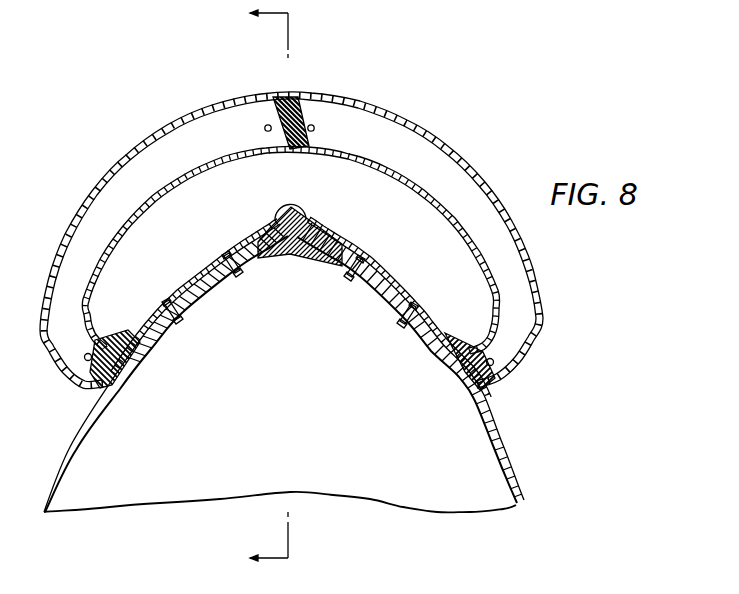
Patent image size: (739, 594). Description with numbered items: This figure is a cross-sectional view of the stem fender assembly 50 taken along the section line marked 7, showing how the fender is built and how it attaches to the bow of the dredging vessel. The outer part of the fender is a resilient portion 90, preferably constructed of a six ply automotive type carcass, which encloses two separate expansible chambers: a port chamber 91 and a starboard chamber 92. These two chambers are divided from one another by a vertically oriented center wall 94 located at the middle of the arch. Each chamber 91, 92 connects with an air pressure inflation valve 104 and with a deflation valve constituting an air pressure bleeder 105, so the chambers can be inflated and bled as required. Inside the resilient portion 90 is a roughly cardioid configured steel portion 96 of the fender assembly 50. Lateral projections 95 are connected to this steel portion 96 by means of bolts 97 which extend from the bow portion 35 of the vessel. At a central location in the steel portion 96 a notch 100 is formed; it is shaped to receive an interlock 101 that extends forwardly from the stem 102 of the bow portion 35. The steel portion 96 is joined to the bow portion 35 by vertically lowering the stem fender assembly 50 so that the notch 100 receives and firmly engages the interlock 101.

The stem fender assembly 50 is at (291, 230).
The resilient portion 90 is at (152, 128).
The port chamber 91 is at (216, 132).
The starboard chamber 92 is at (332, 132).
The center wall 94 is at (291, 154).
The air pressure bleeder 105 is at (311, 124).
The steel portion 96 is at (156, 202).
The interlock 101 is at (283, 210).
The notch 100 is at (301, 230).
The stem 102 is at (318, 228).
The lateral projections 95 is at (248, 240).
The bolts 97 is at (164, 297).
The bow portion 35 is at (200, 302).
The air pressure inflation valve 104 is at (92, 352).
The section line 7- 7 is at (257, 288).